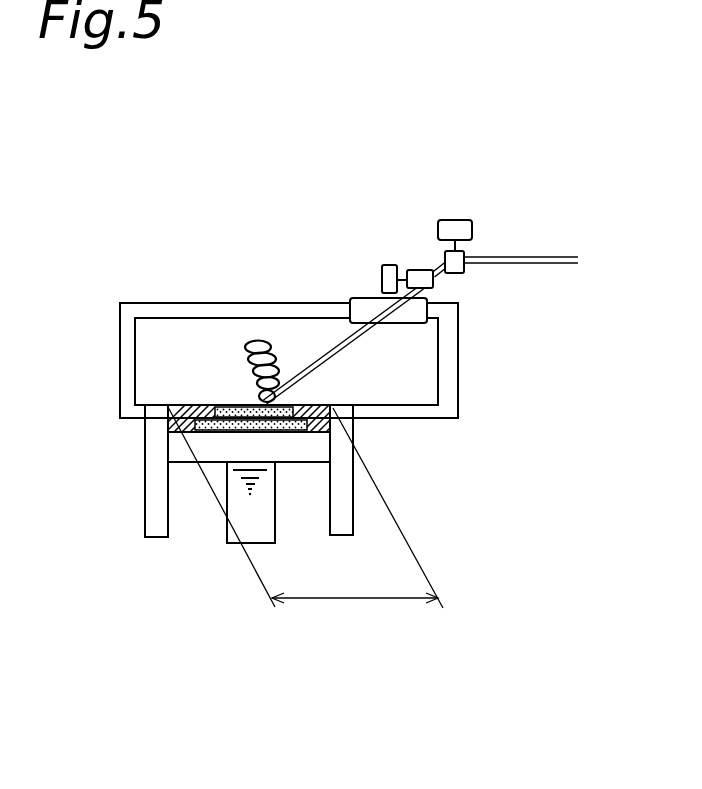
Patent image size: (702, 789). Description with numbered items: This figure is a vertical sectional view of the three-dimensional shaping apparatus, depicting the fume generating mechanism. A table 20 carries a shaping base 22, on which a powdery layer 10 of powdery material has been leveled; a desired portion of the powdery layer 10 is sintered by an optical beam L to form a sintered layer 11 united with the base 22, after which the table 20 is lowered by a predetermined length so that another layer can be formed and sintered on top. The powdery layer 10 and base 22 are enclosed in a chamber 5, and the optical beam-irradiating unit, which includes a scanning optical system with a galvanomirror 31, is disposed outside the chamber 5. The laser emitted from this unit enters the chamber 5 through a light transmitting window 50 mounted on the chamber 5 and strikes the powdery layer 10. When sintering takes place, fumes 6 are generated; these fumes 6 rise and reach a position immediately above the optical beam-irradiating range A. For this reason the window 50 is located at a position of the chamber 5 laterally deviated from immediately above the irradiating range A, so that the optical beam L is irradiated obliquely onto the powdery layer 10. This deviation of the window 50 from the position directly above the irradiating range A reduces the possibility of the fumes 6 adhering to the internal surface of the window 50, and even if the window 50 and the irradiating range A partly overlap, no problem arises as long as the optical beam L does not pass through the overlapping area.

The chamber 5 is at (417, 345).
The fumes 6 is at (252, 343).
The powdery layer 10 is at (168, 418).
The sintered layer 11 is at (223, 406).
The table 20 is at (320, 447).
The shaping base 22 is at (190, 422).
The galvanomirror 31 is at (380, 265).
The light transmitting window 50 is at (352, 302).
The optical beam L is at (537, 263).
The optical beam-irradiating range A is at (305, 507).